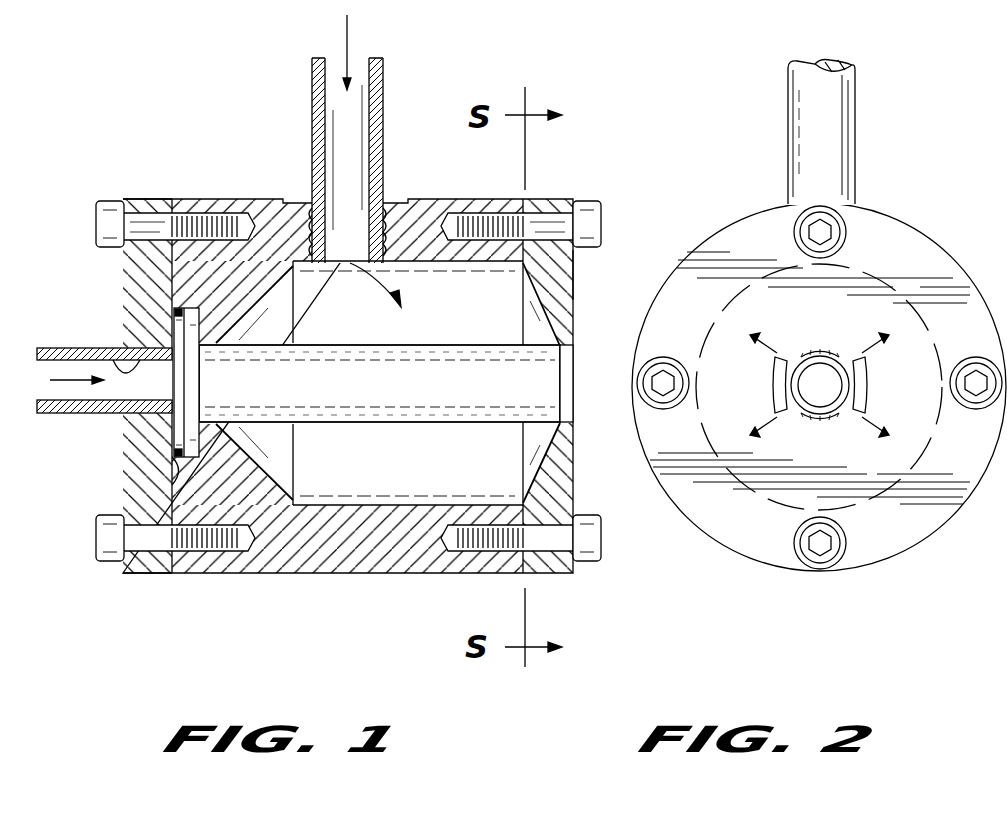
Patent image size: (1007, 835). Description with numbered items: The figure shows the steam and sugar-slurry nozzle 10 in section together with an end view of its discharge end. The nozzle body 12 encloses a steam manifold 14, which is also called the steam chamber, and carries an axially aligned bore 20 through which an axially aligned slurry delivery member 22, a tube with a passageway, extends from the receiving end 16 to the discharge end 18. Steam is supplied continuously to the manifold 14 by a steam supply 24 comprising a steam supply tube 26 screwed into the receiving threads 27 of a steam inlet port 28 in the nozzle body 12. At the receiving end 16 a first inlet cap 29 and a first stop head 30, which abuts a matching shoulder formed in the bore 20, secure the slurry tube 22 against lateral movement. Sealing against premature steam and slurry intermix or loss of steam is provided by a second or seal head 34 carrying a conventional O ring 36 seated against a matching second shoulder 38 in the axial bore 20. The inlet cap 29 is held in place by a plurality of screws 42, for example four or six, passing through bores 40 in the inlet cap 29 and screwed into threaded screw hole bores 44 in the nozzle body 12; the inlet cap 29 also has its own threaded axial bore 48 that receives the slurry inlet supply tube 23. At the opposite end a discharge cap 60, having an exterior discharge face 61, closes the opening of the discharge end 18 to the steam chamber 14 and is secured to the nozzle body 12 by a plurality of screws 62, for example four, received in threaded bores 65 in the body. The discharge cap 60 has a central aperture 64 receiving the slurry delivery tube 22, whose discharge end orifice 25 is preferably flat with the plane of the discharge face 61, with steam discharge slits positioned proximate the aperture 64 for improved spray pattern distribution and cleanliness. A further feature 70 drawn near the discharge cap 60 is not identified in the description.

In FIG. 1, the nozzle 10 is at (234, 194).
In FIG. 1, the nozzle body 12 is at (393, 576).
In FIG. 1, the steam manifold 14 is at (328, 495).
In FIG. 1, the receiving end 16 is at (160, 500).
In FIG. 1, the discharge end 18 is at (533, 507).
In FIG. 1, the axially aligned bore 20 is at (213, 353).
In FIG. 1, the slurry delivery member 22 is at (492, 343).
In FIG. 1, the slurry inlet supply tube 23 is at (55, 348).
In FIG. 1, the steam supply 24 is at (400, 69).
In FIG. 2, the steam supply 24 is at (860, 104).
In FIG. 2, the discharge end orifice 25 is at (825, 355).
In FIG. 1, the steam supply tube 26 is at (387, 100).
In FIG. 2, the steam supply tube 26 is at (857, 155).
In FIG. 1, the receiving threads 27 is at (362, 205).
In FIG. 1, the steam inlet port 28 is at (340, 193).
In FIG. 1, the first inlet cap 29 is at (137, 573).
In FIG. 1, the first stop head 30 is at (200, 424).
In FIG. 1, the seal head 34 is at (173, 424).
In FIG. 1, the O ring 36 is at (173, 450).
In FIG. 1, the second shoulder 38 is at (170, 455).
In FIG. 1, the bores 40 is at (143, 210).
In FIG. 1, the screws 42 is at (90, 230).
In FIG. 1, the threaded screw hole bores 44 is at (203, 227).
In FIG. 1, the axial bore 48 is at (110, 345).
In FIG. 1, the discharge cap 60 is at (548, 575).
In FIG. 2, the discharge cap 60 is at (932, 278).
In FIG. 1, the exterior discharge face 61 is at (578, 277).
In FIG. 1, the screws 62 is at (600, 543).
In FIG. 2, the screws 62 is at (847, 232).
In FIG. 2, the central aperture 64 is at (820, 420).
In FIG. 1, the receiving threaded bores 65 is at (473, 227).
In FIG. 1, the conical surface 70 is at (533, 280).